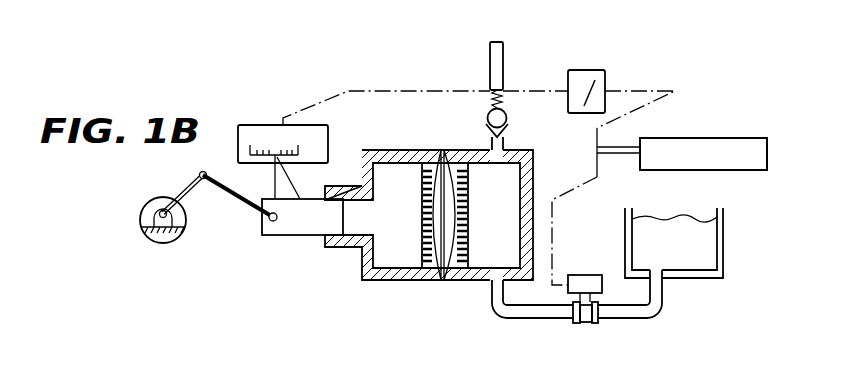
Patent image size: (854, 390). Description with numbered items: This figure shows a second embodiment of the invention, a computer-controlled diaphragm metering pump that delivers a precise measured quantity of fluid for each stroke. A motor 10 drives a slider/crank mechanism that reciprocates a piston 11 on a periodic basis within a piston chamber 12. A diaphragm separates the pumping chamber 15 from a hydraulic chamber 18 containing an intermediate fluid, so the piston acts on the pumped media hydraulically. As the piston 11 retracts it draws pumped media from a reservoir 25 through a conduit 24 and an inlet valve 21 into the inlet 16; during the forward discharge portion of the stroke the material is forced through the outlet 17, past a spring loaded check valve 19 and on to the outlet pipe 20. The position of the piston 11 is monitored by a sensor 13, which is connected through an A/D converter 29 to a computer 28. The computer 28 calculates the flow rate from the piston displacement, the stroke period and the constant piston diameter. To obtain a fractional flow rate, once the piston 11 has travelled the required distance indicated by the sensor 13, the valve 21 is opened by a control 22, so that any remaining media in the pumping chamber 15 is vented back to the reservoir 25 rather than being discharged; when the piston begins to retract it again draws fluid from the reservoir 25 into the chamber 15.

The motor 10 is at (150, 243).
The piston 11 is at (311, 223).
The piston chamber 12 is at (352, 248).
The sensor 13 is at (328, 135).
The pumping chamber 15 is at (506, 223).
The inlet 16 is at (500, 268).
The outlet 17 is at (492, 163).
The hydraulic chamber 18 is at (401, 223).
The spring loaded check valve 19 is at (506, 127).
The outlet pipe 20 is at (495, 65).
The inlet valve 21 is at (440, 255).
The control 22 is at (600, 275).
The conduit 24 is at (638, 313).
The reservoir 25 is at (691, 256).
The computer 28 is at (712, 138).
The A/D converter 29 is at (583, 70).